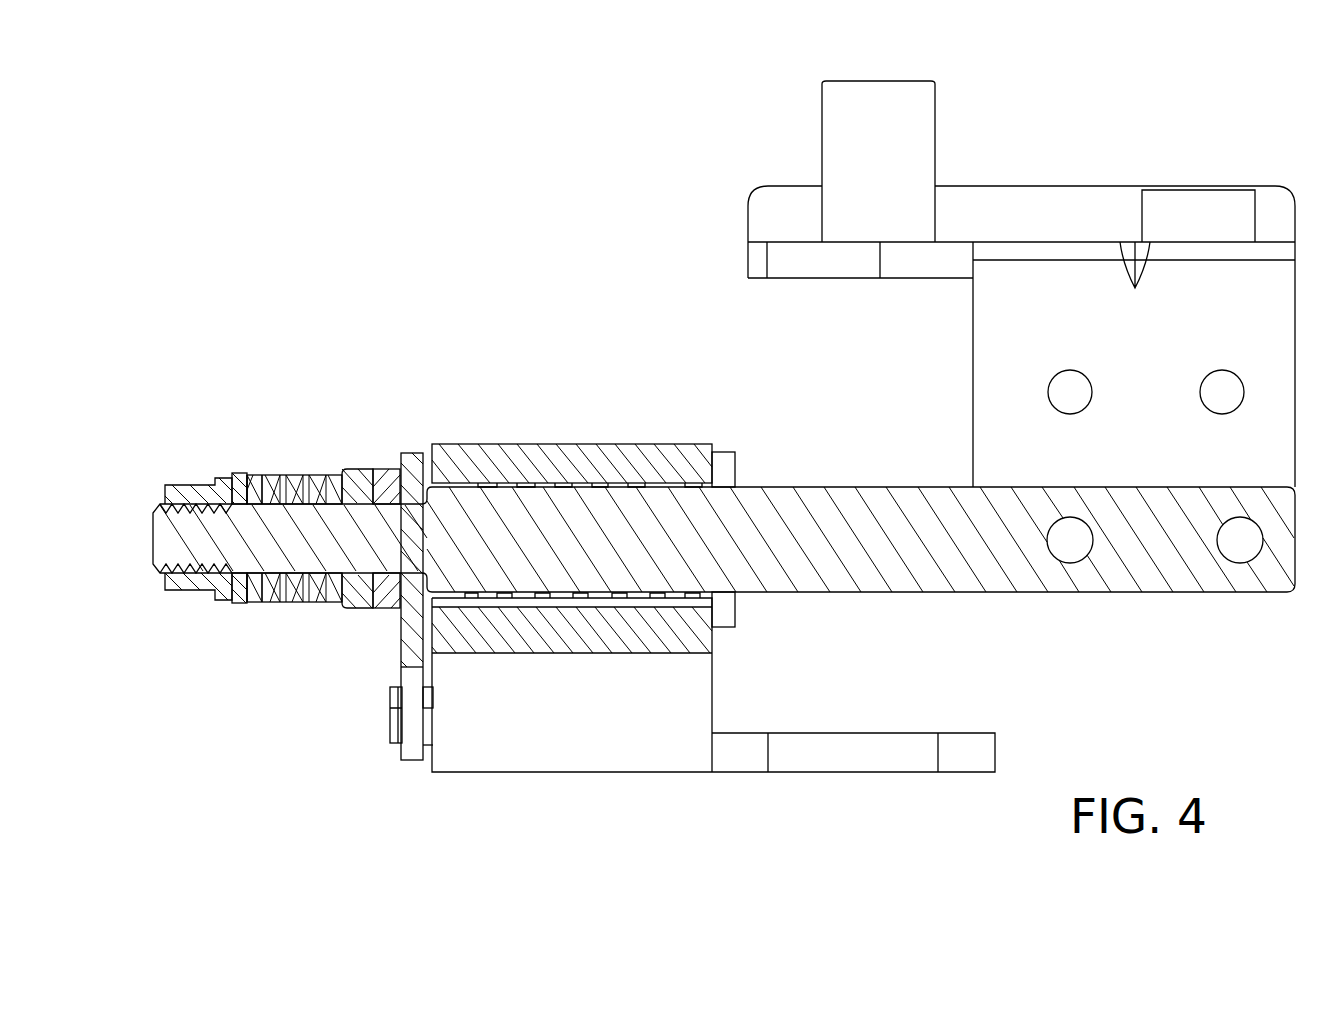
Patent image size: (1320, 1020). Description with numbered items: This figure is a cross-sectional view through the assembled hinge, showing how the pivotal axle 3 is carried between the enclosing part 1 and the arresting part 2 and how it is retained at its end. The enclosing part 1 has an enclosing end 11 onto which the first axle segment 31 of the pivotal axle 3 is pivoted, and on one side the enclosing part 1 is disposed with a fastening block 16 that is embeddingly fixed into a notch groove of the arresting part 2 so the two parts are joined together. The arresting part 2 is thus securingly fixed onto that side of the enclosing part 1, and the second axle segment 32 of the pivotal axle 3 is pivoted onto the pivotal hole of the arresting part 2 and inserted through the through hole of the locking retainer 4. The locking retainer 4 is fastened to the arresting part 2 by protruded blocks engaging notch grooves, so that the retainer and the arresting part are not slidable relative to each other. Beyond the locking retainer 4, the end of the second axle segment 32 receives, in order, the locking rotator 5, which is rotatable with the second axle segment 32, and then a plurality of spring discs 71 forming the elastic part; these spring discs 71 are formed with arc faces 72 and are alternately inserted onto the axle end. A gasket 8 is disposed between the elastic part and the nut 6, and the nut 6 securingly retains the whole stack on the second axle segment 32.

The enclosing part 1 is at (722, 672).
The arresting part 2 is at (419, 452).
The pivotal axle 3 is at (780, 473).
The first axle segment 31 is at (583, 510).
The second axle segment 32 is at (167, 534).
The locking retainer 4 is at (390, 470).
The locking rotator 5 is at (363, 470).
The nut 6 is at (178, 490).
The spring discs 71 is at (267, 603).
The arc faces 72 is at (263, 603).
The gasket 8 is at (237, 472).
The enclosing end 11 is at (475, 447).
The fastening block 16 is at (390, 722).